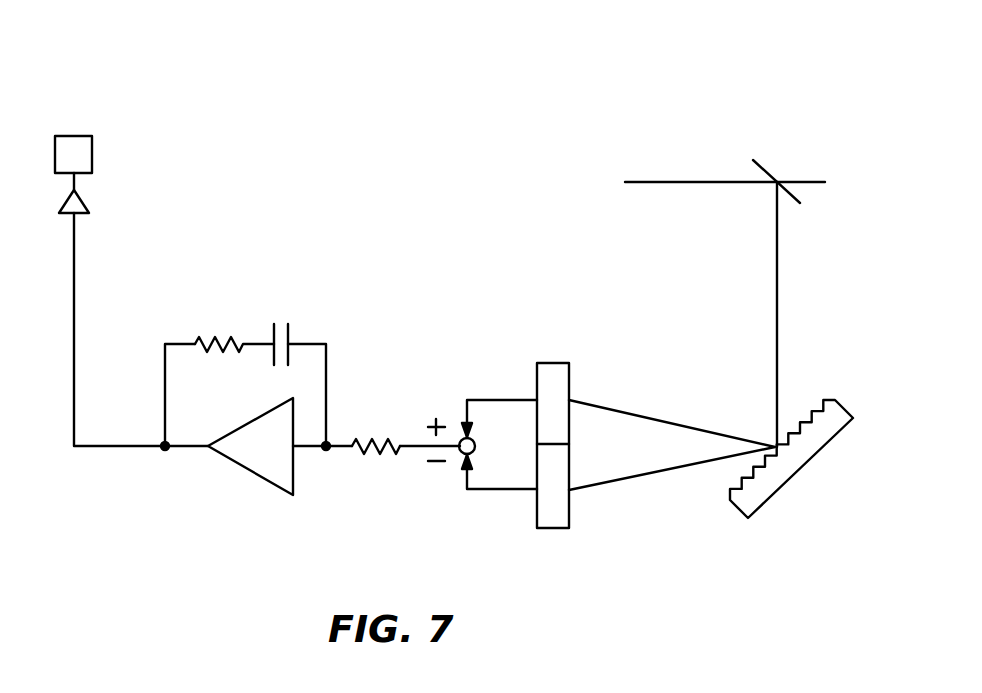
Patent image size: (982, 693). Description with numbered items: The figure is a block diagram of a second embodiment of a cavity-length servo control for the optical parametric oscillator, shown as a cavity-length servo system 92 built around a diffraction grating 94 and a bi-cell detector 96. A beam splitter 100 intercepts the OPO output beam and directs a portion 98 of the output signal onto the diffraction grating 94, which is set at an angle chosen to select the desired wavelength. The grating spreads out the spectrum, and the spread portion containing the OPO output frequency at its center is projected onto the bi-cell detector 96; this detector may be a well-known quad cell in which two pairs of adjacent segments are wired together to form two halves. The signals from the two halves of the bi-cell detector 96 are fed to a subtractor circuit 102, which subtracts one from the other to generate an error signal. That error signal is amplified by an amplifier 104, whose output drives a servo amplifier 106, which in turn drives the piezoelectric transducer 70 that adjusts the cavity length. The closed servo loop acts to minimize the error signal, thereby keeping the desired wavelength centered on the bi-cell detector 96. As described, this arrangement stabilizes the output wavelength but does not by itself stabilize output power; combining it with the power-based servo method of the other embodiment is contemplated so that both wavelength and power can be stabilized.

The piezoelectric transducer 70 is at (93, 150).
The cavity-length servo system 92 is at (583, 104).
The diffraction grating 94 is at (736, 515).
The bi-cell detector 96 is at (558, 528).
The portion of the OPO output signal 98 is at (778, 323).
The beam splitter 100 is at (766, 167).
The subtractor circuit 102 is at (466, 455).
The amplifier 104 is at (243, 465).
The servo amplifier 106 is at (89, 206).